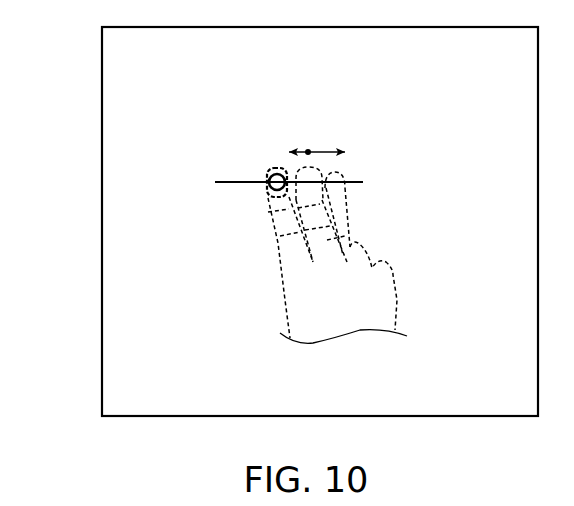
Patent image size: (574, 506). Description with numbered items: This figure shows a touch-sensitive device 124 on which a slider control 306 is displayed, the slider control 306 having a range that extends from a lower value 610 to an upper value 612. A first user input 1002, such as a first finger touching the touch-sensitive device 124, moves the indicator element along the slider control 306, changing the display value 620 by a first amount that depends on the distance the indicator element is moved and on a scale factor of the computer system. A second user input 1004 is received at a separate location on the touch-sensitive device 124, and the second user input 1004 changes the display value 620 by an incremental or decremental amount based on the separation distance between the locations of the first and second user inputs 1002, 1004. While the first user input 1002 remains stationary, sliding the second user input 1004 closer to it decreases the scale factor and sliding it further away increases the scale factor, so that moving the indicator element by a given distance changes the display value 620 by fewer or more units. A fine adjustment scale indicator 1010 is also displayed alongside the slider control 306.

The touch-sensitive device 124 is at (101, 220).
The slider control 306 is at (222, 168).
The lower value 610 is at (195, 183).
The upper value 612 is at (412, 181).
The display value 620 is at (258, 135).
The first user input 1002 is at (266, 216).
The second user input 1004 is at (335, 165).
The fine adjustment scale indicator 1010 is at (312, 128).